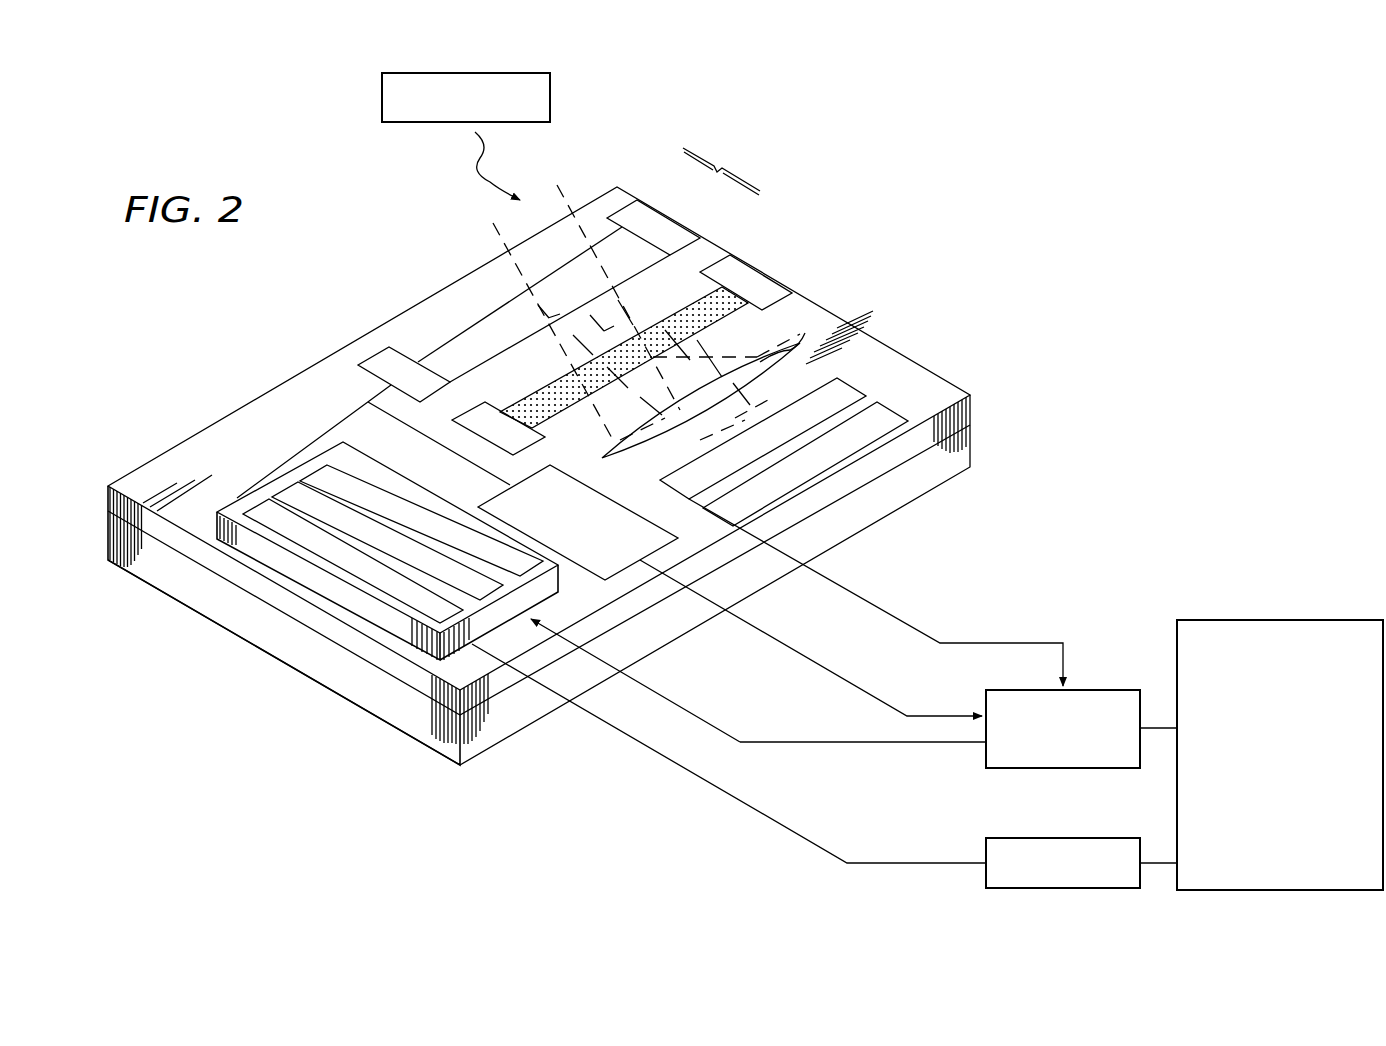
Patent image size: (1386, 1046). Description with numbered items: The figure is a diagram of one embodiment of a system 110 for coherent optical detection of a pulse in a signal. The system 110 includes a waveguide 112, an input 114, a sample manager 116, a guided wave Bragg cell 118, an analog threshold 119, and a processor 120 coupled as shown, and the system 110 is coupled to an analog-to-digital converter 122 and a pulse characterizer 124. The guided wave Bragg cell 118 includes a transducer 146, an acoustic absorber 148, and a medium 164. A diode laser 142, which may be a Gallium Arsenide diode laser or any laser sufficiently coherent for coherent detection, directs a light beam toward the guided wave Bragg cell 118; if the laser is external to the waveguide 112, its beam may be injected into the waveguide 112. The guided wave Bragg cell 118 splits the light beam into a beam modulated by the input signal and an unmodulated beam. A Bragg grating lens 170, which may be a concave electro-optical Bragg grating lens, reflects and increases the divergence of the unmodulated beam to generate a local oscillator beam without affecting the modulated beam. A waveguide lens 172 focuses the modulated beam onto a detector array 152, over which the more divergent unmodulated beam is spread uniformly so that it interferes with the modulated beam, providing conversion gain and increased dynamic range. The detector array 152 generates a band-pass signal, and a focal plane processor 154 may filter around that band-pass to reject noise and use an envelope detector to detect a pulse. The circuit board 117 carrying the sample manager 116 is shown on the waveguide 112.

The system 110 is at (1166, 272).
The waveguide 112 is at (99, 483).
The input 114 is at (256, 486).
The sample manager 116 is at (335, 593).
The sample manager board 117 is at (387, 551).
The guided wave Bragg cell 118 is at (722, 171).
The analog threshold 119 is at (628, 575).
The processor 120 is at (1075, 770).
The analog-to-digital converter 122 is at (1068, 890).
The pulse characterizer 124 is at (1280, 755).
The diode laser 142 is at (382, 96).
The transducer 146 is at (372, 360).
The acoustic absorber 148 is at (655, 227).
The detector array 152 is at (858, 376).
The focal plane processor 154 is at (894, 408).
The medium 164 is at (448, 328).
The Bragg grating lens 170 is at (540, 385).
The waveguide lens 172 is at (805, 333).